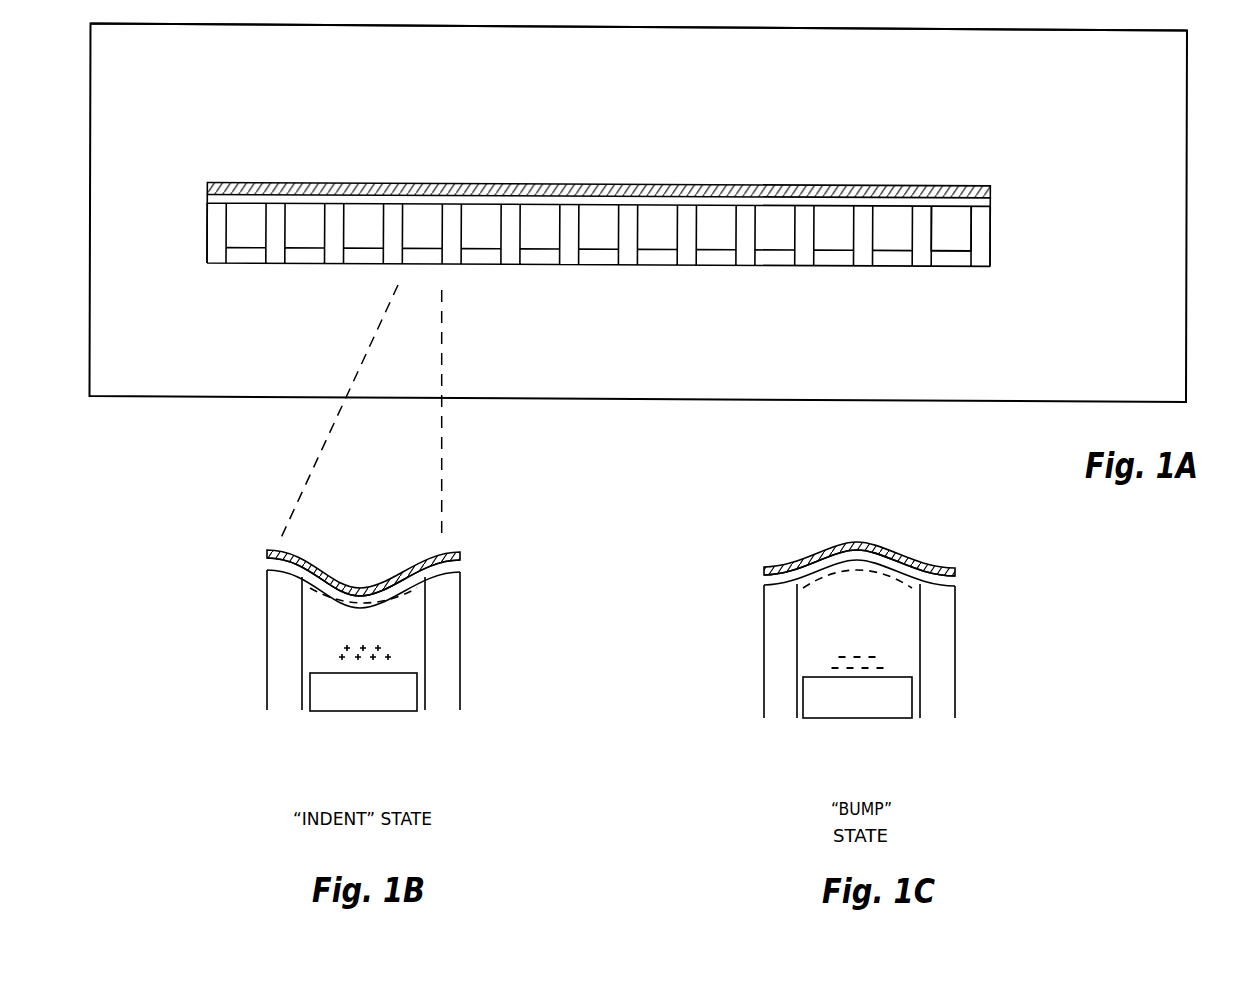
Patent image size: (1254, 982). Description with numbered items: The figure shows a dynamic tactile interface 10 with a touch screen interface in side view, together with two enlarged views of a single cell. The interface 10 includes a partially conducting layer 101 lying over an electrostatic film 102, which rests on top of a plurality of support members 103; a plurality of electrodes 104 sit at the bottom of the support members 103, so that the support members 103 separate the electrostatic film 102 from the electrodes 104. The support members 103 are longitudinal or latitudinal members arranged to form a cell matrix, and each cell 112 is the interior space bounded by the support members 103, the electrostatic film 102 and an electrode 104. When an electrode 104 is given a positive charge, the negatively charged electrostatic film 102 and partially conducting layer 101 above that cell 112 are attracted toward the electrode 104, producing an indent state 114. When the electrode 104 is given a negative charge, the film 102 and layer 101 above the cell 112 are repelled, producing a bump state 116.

In FIG. 1A, the dynamic tactile interface 10 is at (90, 160).
In FIG. 1A, the partially conducting layer 101 is at (232, 182).
In FIG. 1A, the electrostatic film 102 is at (991, 202).
In FIG. 1B, the electrostatic film 102 is at (267, 563).
In FIG. 1C, the electrostatic film 102 is at (764, 571).
In FIG. 1A, the support members 103 is at (213, 263).
In FIG. 1B, the support members 103 is at (267, 650).
In FIG. 1C, the support members 103 is at (764, 643).
In FIG. 1A, the electrodes 104 is at (300, 263).
In FIG. 1B, the electrodes 104 is at (360, 713).
In FIG. 1C, the electrodes 104 is at (860, 720).
In FIG. 1A, the cells 112 is at (952, 237).
In FIG. 1B, the cells 112 is at (405, 646).
In FIG. 1C, the cells 112 is at (897, 650).
In FIG. 1B, the indent state 114 is at (364, 566).
In FIG. 1C, the bump state 116 is at (856, 527).